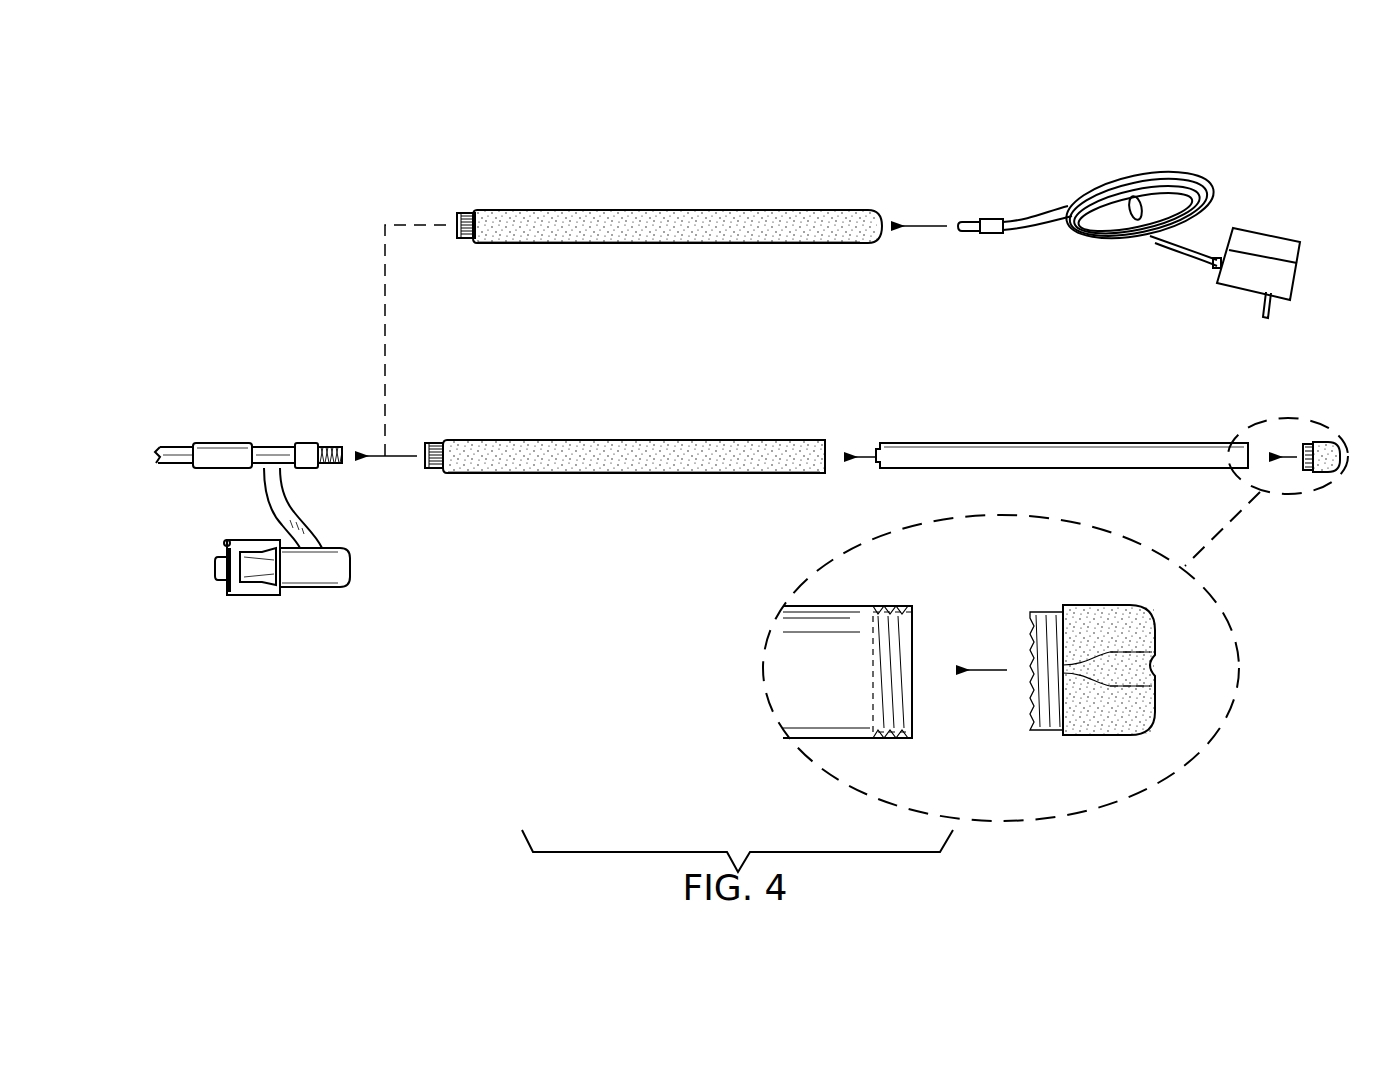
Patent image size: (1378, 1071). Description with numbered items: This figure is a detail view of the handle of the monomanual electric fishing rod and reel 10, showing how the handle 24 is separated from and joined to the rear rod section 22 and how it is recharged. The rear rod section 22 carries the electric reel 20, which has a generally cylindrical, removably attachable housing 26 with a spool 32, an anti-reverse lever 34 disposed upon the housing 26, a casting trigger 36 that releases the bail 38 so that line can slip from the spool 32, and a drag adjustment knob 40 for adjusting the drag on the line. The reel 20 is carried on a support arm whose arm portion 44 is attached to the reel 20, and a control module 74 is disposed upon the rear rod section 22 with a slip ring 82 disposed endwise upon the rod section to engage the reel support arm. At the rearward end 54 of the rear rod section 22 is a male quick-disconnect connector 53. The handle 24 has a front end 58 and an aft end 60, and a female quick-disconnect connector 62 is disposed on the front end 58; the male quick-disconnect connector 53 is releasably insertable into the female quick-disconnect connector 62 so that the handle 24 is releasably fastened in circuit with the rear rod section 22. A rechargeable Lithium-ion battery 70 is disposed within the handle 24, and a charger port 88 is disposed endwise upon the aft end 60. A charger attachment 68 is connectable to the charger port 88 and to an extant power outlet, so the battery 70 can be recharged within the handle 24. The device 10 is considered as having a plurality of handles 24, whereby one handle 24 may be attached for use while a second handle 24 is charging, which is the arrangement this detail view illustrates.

The monomanual electric fishing rod and reel 10 is at (1210, 160).
The electric reel 20 is at (370, 572).
The rear rod section 22 is at (174, 447).
The handle 24 is at (706, 214).
The housing 26 is at (342, 584).
The spool 32 is at (240, 582).
The anti-reverse lever 34 is at (266, 590).
The casting trigger 36 is at (226, 540).
The bail 38 is at (226, 590).
The drag adjustment knob 40 is at (218, 566).
The arm portion 44 is at (272, 494).
The male quick-disconnect connector 53 is at (334, 463).
The rearward end 54 is at (272, 447).
The front end 58 is at (514, 240).
The aft end 60 is at (868, 244).
The female quick-disconnect connector 62 is at (470, 214).
The charger attachment 68 is at (992, 220).
The rechargeable Lithium-ion battery 70 is at (1153, 444).
The control module 74 is at (222, 447).
The slip ring 82 is at (310, 447).
The charger port 88 is at (884, 224).